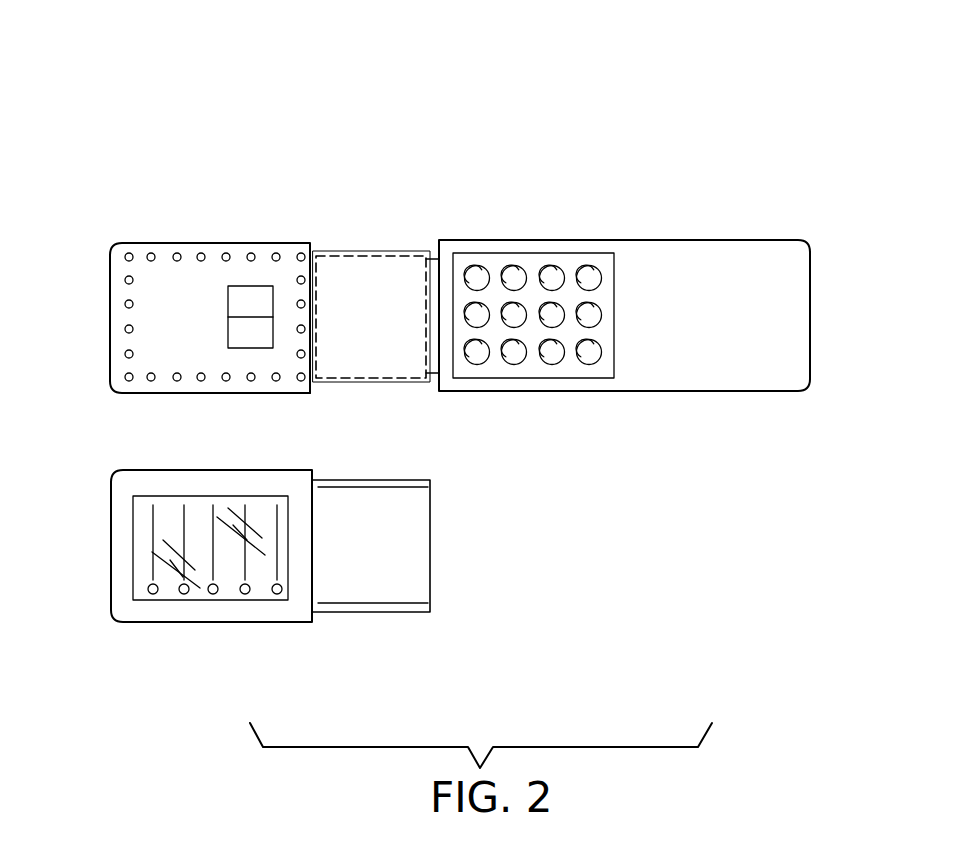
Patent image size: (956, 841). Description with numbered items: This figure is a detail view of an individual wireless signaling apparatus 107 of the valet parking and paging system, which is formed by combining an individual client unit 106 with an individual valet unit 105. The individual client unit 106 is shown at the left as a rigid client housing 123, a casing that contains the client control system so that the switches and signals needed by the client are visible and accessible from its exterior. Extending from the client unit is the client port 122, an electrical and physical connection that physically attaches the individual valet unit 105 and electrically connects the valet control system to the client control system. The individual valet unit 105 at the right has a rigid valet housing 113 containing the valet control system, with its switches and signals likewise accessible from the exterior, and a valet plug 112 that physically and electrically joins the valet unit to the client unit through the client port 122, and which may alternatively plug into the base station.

The individual wireless signaling apparatus 107 is at (206, 129).
The individual client unit 106 is at (177, 242).
The individual valet unit 105 is at (683, 238).
The client port 122 is at (357, 250).
The valet plug 112 is at (312, 358).
The valet housing 113 is at (812, 337).
The client housing 123 is at (110, 332).